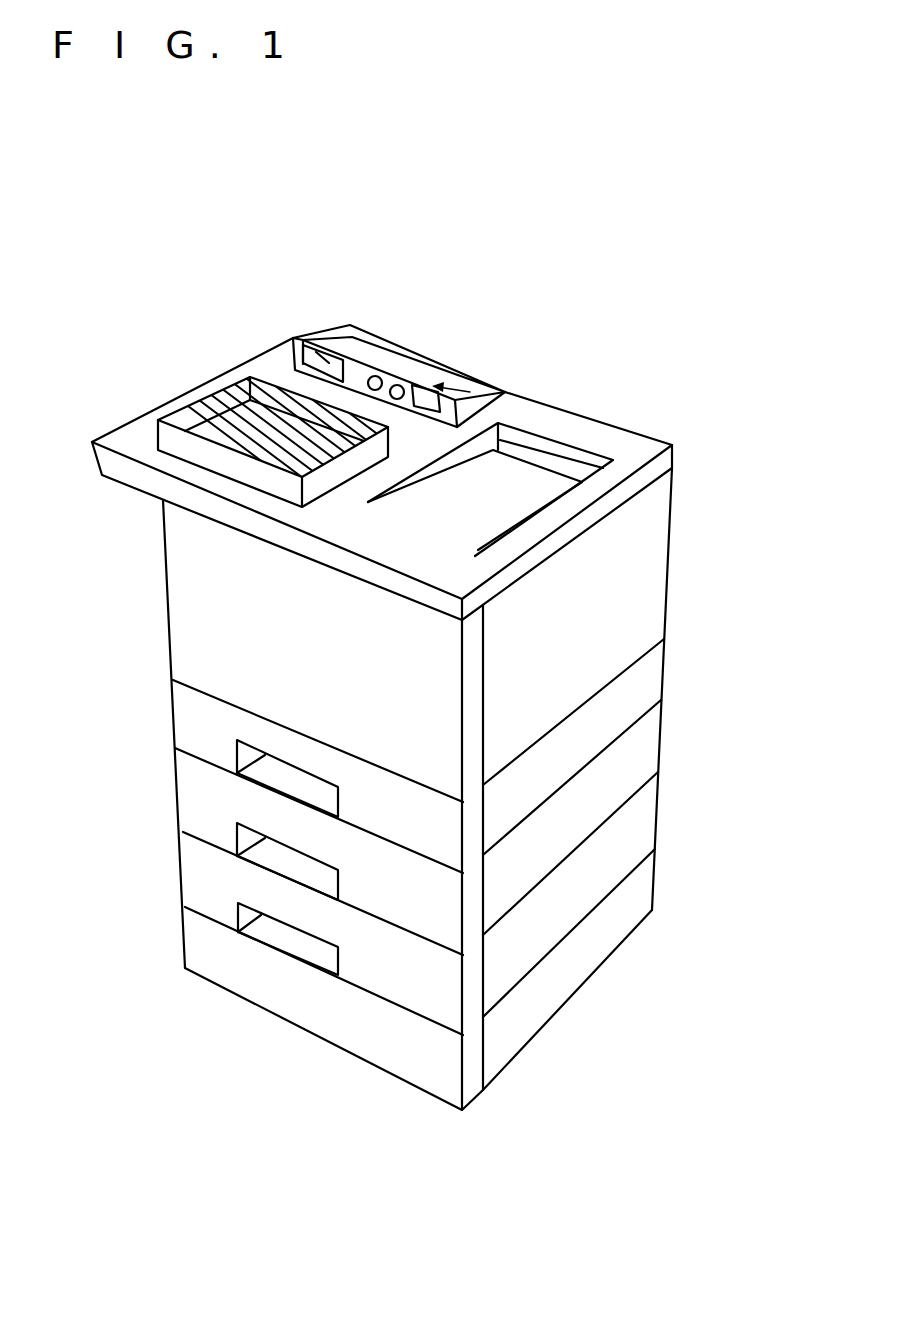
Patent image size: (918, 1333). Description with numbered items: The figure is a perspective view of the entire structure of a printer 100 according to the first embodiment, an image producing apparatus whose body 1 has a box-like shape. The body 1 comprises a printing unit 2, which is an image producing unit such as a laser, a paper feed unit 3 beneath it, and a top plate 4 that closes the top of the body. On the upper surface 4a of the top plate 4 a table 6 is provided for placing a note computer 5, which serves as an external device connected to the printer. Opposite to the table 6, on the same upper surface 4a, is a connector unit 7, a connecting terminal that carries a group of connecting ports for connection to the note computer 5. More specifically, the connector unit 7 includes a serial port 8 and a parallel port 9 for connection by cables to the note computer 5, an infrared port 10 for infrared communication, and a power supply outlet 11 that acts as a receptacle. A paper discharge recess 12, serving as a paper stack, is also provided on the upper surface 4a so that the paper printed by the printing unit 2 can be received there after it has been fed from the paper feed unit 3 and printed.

The printer 100 is at (600, 150).
The body 1 is at (679, 511).
The printing unit 2 is at (587, 615).
The paper feed unit 3 is at (615, 855).
The top plate 4 is at (649, 445).
The upper surface 4a is at (540, 403).
The note computer 5 is at (160, 434).
The table 6 is at (240, 433).
The connector unit 7 is at (388, 362).
The serial port 8 is at (370, 377).
The parallel port 9 is at (404, 386).
The infrared port 10 is at (468, 369).
The power supply outlet 11 is at (305, 343).
The paper discharge recess 12 is at (515, 478).